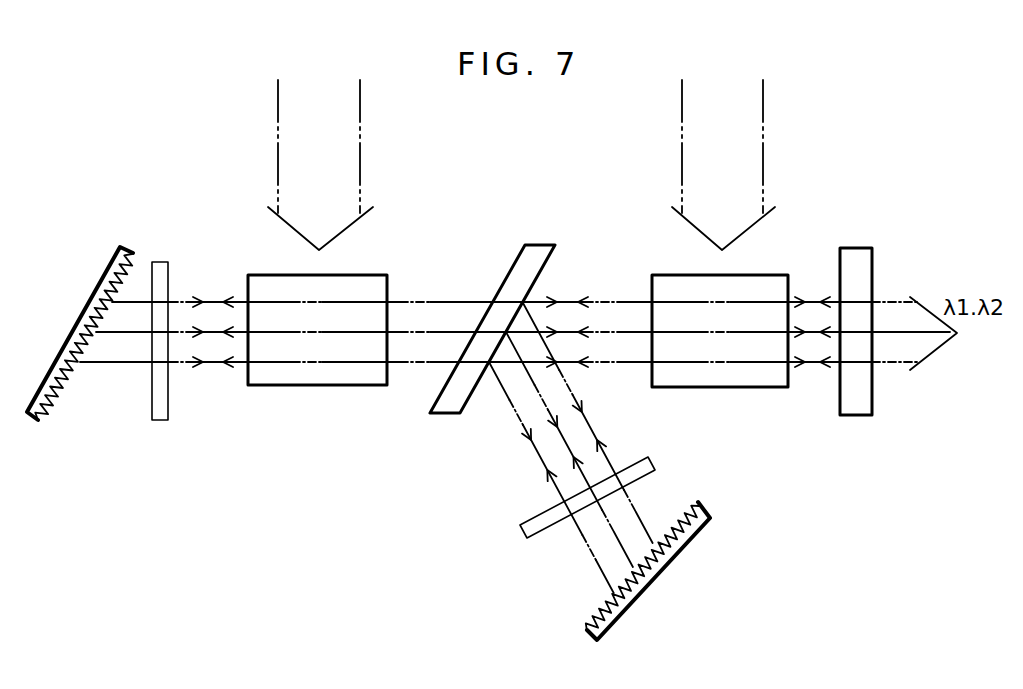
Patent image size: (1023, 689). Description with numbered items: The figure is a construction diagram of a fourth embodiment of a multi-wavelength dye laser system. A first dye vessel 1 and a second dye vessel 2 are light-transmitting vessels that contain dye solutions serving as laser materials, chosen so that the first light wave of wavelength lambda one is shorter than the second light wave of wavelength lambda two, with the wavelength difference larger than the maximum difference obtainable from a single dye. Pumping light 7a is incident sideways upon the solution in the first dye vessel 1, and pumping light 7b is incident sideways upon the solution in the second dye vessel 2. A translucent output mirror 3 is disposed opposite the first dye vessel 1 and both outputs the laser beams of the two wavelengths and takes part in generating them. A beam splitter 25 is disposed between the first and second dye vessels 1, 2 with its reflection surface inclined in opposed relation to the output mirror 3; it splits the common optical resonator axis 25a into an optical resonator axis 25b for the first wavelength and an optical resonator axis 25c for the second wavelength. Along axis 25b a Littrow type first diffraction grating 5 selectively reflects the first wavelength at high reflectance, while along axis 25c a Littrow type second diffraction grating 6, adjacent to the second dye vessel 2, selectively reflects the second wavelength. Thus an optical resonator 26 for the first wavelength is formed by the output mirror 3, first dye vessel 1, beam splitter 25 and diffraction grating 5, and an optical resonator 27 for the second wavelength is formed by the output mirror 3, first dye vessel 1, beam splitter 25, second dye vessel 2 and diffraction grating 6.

The first dye vessel 1 is at (733, 380).
The second dye vessel 2 is at (315, 388).
The output mirror 3 is at (856, 410).
The first wavelength selecting means 5 is at (643, 587).
The second wavelength selecting means 6 is at (32, 413).
The pumping light 7a is at (720, 96).
The pumping light 7b is at (311, 105).
The beam splitter 25 is at (447, 410).
The optical resonator axis 25a is at (815, 333).
The optical resonator axis 25b is at (570, 443).
The optical resonator axis 25c is at (213, 330).
The optical resonator 26 is at (833, 542).
The optical resonator 27 is at (408, 549).